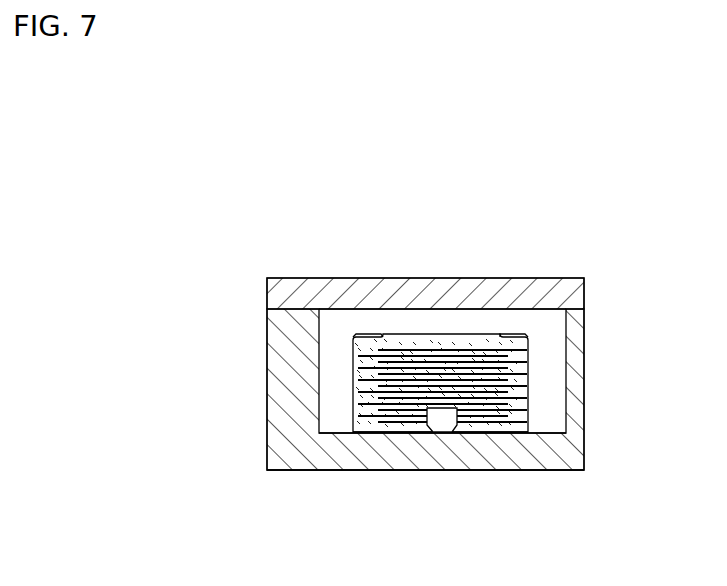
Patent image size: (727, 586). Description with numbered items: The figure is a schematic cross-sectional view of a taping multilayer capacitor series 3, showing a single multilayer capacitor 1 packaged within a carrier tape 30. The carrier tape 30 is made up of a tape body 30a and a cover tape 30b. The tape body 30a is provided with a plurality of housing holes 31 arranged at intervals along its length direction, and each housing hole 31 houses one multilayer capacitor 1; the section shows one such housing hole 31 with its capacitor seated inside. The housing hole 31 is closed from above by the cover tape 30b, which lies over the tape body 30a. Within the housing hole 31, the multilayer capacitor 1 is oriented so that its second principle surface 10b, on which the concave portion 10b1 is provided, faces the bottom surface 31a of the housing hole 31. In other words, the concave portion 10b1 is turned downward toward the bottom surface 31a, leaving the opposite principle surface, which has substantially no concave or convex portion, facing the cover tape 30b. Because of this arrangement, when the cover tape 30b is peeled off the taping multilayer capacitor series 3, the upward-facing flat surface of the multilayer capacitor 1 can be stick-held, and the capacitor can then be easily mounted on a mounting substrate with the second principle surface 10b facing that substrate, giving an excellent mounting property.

The multilayer capacitor 1 is at (435, 333).
The taping multilayer capacitor series 3 is at (387, 256).
The second principle surface 10b is at (395, 435).
The concave portion 10b1 is at (438, 428).
The carrier tape 30 is at (302, 277).
The tape body 30a is at (555, 470).
The cover tape 30b is at (557, 320).
The housing hole 31 is at (570, 305).
The bottom surface 31a is at (553, 433).